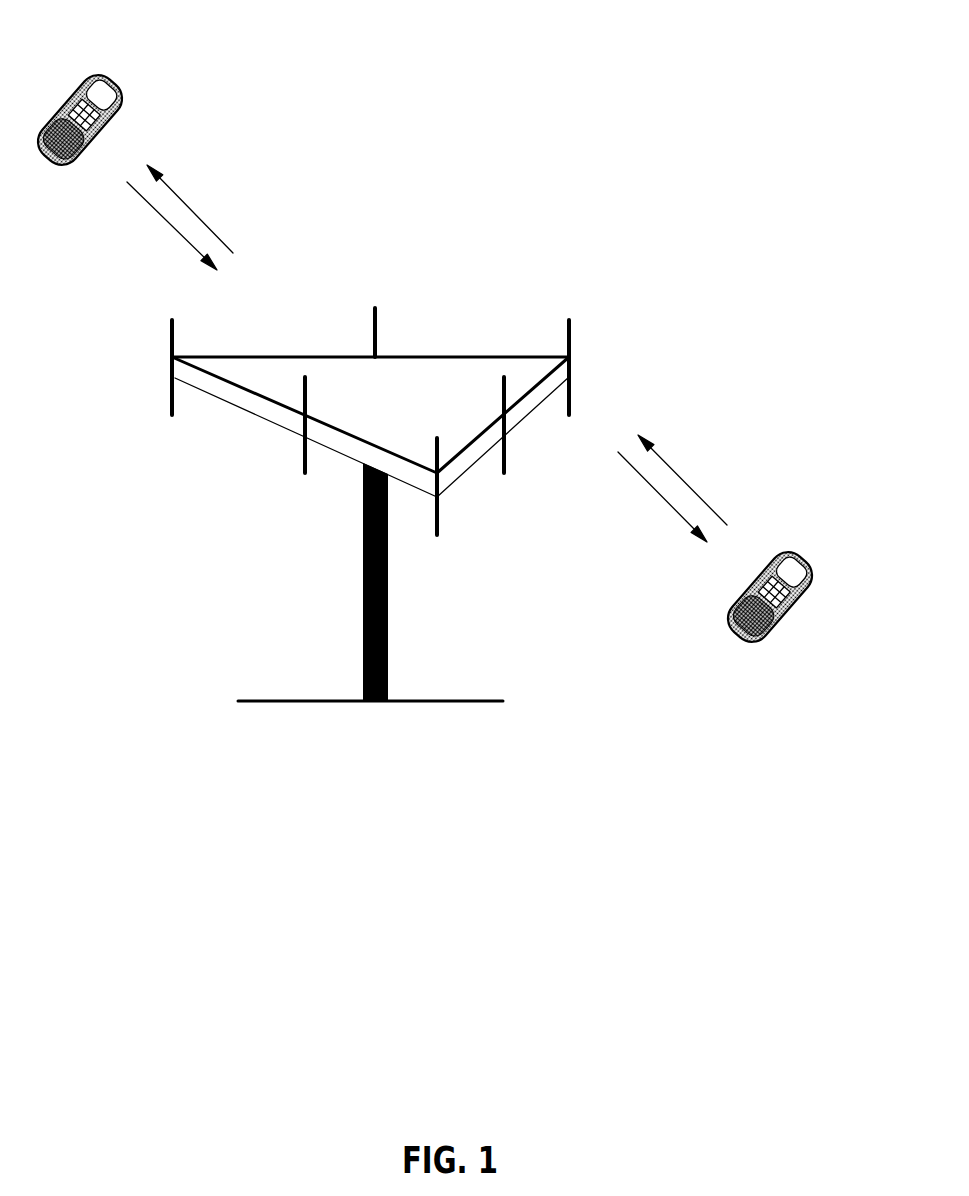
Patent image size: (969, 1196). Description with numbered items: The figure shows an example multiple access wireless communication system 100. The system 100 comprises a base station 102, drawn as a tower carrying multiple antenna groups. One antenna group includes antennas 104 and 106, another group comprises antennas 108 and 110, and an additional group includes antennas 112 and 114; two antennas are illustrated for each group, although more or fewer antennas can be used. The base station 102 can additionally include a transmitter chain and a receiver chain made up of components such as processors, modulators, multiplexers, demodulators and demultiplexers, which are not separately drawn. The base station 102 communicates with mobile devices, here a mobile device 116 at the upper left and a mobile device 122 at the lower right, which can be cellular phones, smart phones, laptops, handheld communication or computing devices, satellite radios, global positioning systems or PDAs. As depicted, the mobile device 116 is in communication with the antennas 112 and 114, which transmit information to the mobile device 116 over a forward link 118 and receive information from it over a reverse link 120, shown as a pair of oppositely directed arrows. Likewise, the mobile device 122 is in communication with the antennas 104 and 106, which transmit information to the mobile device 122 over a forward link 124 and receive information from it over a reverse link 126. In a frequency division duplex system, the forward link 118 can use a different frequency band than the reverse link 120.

The wireless communication system 100 is at (532, 127).
The base station 102 is at (387, 703).
The antenna 104 is at (570, 320).
The antenna 106 is at (505, 453).
The antenna 108 is at (437, 515).
The antenna 110 is at (304, 475).
The antenna 112 is at (172, 322).
The antenna 114 is at (375, 310).
The mobile device 116 is at (90, 75).
The forward link 118 is at (193, 210).
The reverse link 120 is at (183, 240).
The mobile device 122 is at (780, 552).
The forward link 124 is at (667, 507).
The reverse link 126 is at (678, 475).